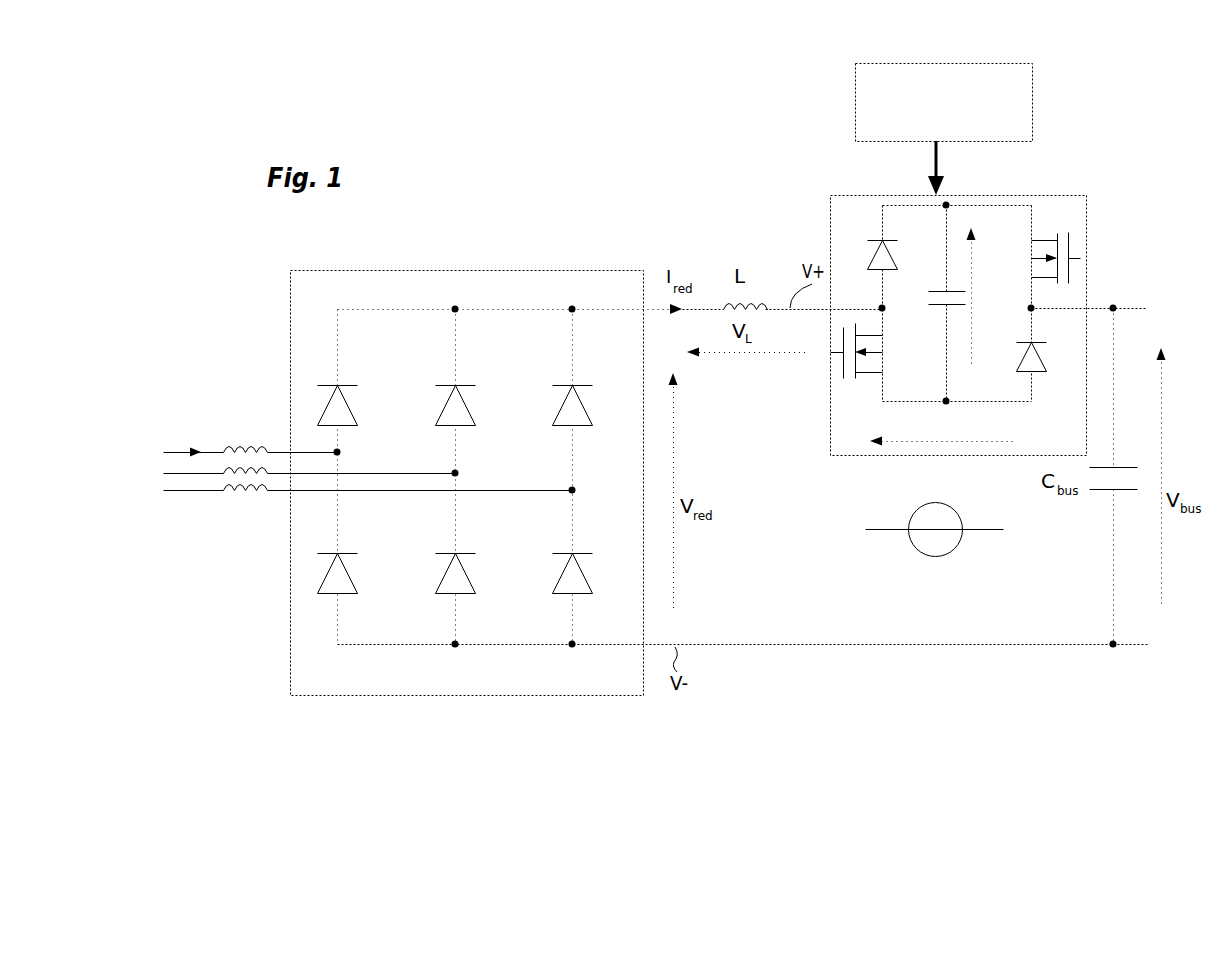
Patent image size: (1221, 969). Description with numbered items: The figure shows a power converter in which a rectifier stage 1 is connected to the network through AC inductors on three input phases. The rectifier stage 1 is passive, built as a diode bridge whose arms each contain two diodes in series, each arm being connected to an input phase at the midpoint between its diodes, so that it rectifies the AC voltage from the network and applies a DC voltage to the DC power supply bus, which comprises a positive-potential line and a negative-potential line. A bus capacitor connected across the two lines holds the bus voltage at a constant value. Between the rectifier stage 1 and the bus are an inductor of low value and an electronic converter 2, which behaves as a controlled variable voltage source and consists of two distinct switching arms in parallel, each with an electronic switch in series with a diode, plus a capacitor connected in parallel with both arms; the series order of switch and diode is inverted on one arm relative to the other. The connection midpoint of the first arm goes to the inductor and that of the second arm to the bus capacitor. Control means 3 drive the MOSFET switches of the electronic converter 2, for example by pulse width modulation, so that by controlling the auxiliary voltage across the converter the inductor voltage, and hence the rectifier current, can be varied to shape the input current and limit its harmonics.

The rectifier stage 1 is at (527, 270).
The electronic converter 2 is at (830, 229).
The control means 3 is at (944, 130).